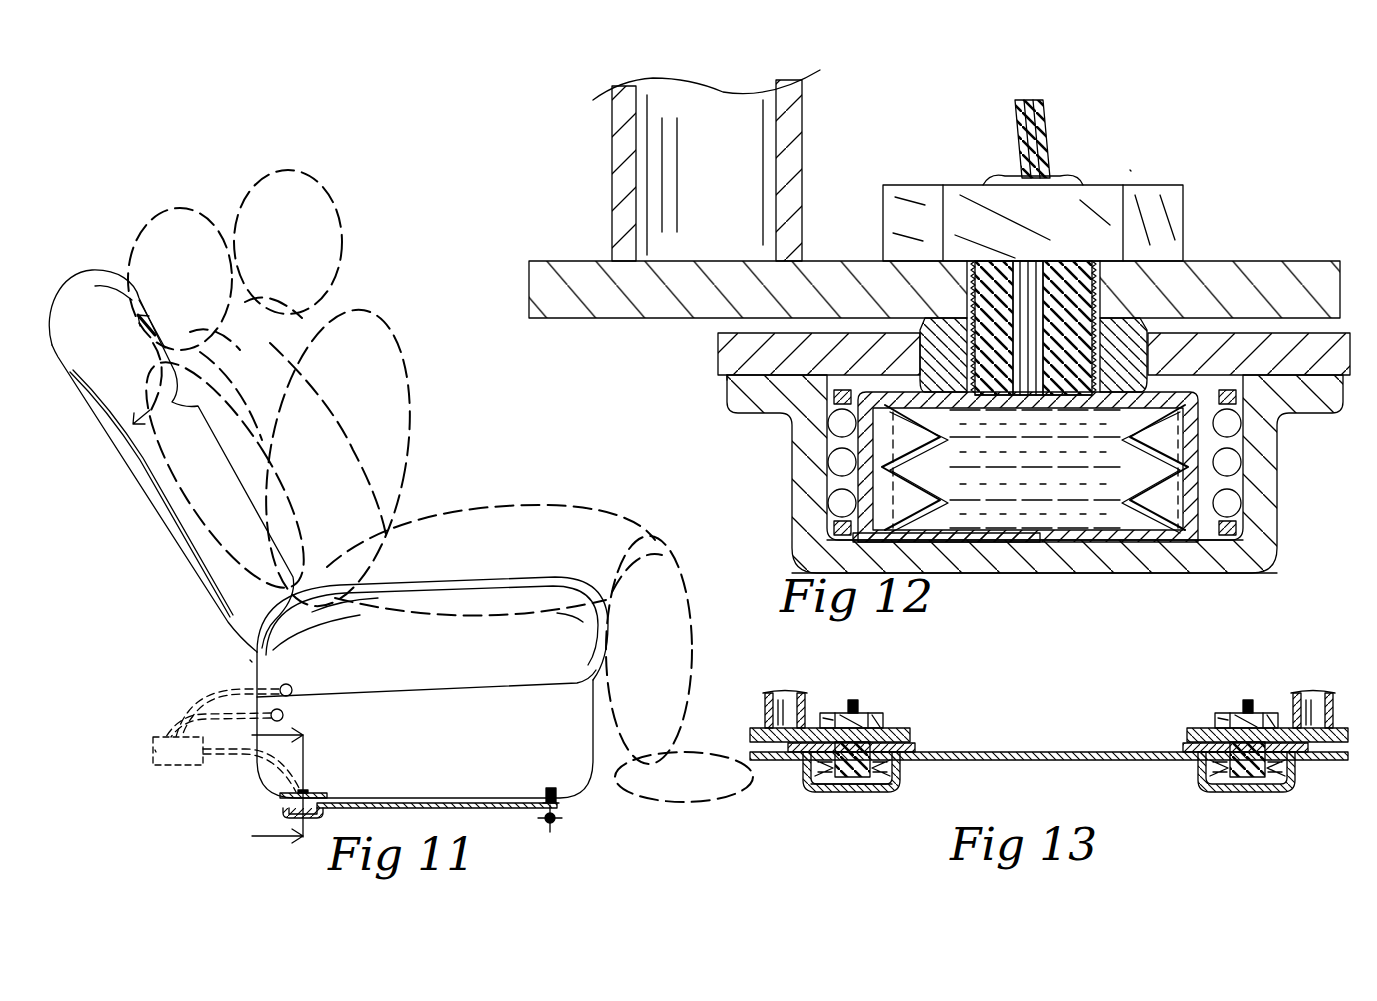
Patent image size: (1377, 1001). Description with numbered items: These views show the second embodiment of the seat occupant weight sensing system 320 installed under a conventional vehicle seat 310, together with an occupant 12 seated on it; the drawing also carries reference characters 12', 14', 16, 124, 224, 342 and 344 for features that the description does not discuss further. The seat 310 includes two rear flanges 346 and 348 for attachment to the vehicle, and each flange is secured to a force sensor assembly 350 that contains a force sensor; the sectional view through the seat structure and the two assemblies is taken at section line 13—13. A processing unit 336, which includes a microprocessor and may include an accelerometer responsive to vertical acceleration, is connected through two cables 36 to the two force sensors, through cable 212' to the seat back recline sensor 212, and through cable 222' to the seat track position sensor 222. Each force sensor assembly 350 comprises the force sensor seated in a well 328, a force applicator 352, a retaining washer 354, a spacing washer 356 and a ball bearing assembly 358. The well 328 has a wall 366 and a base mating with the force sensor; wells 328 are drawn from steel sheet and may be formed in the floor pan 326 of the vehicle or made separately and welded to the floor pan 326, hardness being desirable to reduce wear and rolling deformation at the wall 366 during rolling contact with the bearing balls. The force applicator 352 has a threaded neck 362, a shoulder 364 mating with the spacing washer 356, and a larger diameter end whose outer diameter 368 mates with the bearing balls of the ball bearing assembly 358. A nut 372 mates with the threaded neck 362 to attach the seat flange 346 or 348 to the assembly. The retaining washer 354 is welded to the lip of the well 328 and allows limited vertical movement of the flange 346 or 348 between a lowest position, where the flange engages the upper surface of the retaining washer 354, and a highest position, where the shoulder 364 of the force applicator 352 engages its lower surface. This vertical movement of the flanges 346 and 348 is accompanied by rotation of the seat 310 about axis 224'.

In FIG. 11, the occupant in upright position 12 is at (493, 486).
In FIG. 11, the occupant in reclined position 12' is at (225, 379).
In FIG. 11, the seat back in reclined position 14' is at (266, 444).
In FIG. 11, the seat cushion 16 is at (460, 578).
In FIG. 11, the seat 310 is at (198, 645).
In FIG. 11, the seat occupant weight sensing system 320 is at (137, 746).
In FIG. 11, the seat back recline sensor 212 is at (314, 693).
In FIG. 11, the seat track position sensor 222 is at (308, 720).
In FIG. 11, the cable 212' is at (227, 704).
In FIG. 11, the cable 222' is at (194, 718).
In FIG. 11, the processing unit 336 is at (198, 763).
In FIG. 11, the cables 36 is at (240, 760).
In FIG. 12, the cables 36 is at (1048, 128).
In FIG. 11, the section line 13 is at (260, 787).
In FIG. 11, the rear flange 346 is at (311, 793).
In FIG. 12, the rear flange 346 is at (574, 262).
In FIG. 13, the rear flange 346 is at (900, 730).
In FIG. 11, the well 328 is at (316, 818).
In FIG. 12, the well 328 is at (1113, 570).
In FIG. 13, the well 328 is at (850, 793).
In FIG. 11, the floor pan 326 is at (460, 807).
In FIG. 12, the floor pan 326 is at (742, 413).
In FIG. 13, the floor pan 326 is at (1027, 760).
In FIG. 11, the fastener 224 is at (521, 793).
In FIG. 11, the axis 224' is at (580, 827).
In FIG. 12, the seat frame tube 342 is at (803, 118).
In FIG. 13, the seat frame tube 342 is at (807, 703).
In FIG. 13, the second seat frame tube 344 is at (1293, 703).
In FIG. 13, the rear flange 348 is at (1203, 728).
In FIG. 12, the nut 372 is at (955, 185).
In FIG. 12, the cable bore 124 is at (1072, 280).
In FIG. 12, the threaded neck 362 is at (967, 298).
In FIG. 12, the spacing washer 356 is at (1127, 323).
In FIG. 12, the shoulder 364 is at (1148, 377).
In FIG. 12, the retaining washer 354 is at (718, 352).
In FIG. 12, the ball bearing assembly 358 is at (840, 422).
In FIG. 12, the outer diameter 368 is at (860, 487).
In FIG. 12, the wall 366 is at (1217, 487).
In FIG. 12, the force applicator 352 is at (1223, 560).
In FIG. 12, the force sensor assembly 350 is at (1198, 587).
In FIG. 13, the force sensor assembly 350 is at (840, 799).